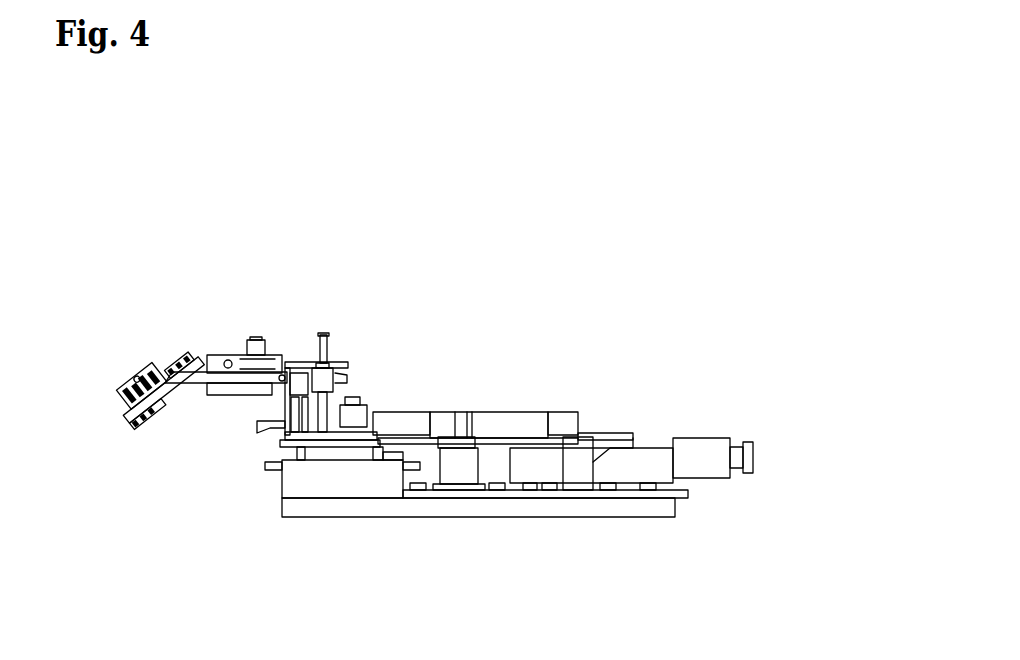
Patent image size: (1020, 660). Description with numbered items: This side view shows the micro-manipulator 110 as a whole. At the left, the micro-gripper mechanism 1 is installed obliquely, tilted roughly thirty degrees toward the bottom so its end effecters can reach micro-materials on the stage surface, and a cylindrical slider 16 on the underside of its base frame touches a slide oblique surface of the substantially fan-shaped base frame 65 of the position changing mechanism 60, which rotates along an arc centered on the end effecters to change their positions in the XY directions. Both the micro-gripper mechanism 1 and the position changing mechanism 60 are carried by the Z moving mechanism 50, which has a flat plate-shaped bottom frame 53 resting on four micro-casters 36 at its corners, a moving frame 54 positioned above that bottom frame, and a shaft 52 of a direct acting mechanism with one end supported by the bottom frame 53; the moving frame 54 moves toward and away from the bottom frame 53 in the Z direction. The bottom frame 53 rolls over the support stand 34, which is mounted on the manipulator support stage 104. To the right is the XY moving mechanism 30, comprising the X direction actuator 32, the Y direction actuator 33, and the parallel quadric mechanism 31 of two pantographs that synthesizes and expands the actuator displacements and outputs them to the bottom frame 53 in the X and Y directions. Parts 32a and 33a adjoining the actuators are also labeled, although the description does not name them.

The micro-gripper mechanism 1 is at (122, 368).
The cylindrical slider 16 is at (285, 362).
The XY moving mechanism 30 is at (475, 384).
The parallel quadric mechanism 31 is at (527, 412).
The X direction actuator 32 is at (707, 437).
The motor bracket 32a is at (605, 437).
The Y direction actuator 33 is at (462, 472).
The slider guide 33a is at (450, 443).
The support stand 34 is at (262, 470).
The micro-casters 36 is at (395, 456).
The Z moving mechanism 50 is at (344, 439).
The shaft 52 is at (325, 402).
The bottom frame 53 is at (338, 455).
The moving frame 54 is at (332, 362).
The position changing mechanism 60 is at (228, 333).
The base frame 65 is at (218, 397).
The manipulator support stage 104 is at (677, 501).
The micro-manipulator 110 is at (440, 224).